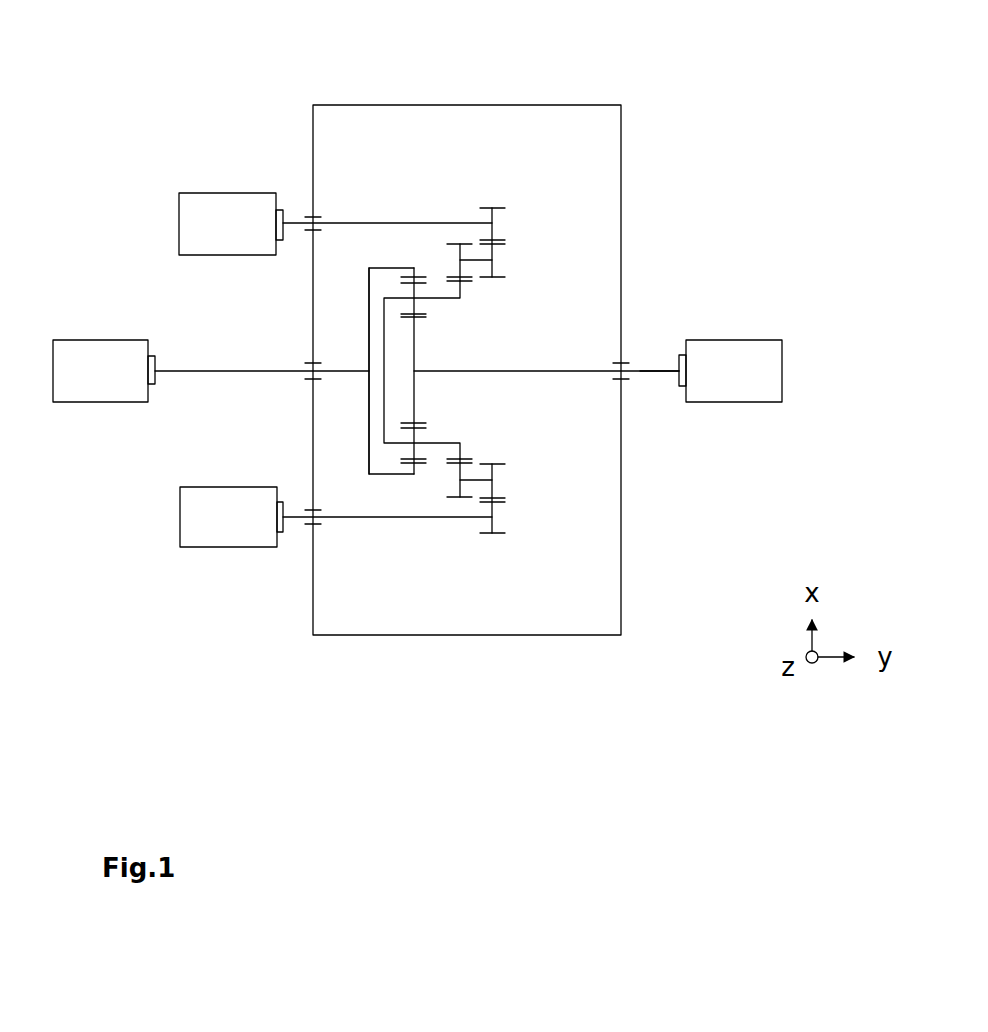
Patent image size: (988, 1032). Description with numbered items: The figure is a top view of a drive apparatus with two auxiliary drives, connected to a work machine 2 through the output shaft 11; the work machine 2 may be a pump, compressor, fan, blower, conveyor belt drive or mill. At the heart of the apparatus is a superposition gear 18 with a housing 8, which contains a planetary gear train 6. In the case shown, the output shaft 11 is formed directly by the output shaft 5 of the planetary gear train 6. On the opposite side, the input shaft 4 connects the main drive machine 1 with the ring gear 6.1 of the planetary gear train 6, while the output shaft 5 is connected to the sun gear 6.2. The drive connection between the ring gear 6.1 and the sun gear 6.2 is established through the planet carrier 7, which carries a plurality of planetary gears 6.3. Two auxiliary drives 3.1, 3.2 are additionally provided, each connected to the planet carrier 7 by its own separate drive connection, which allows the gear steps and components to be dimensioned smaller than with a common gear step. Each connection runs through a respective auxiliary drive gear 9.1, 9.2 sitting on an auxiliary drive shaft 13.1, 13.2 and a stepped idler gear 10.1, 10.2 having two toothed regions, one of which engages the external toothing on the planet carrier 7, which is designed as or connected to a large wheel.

The main drive machine 1 is at (103, 340).
The work machine 2 is at (738, 337).
The auxiliary drive 3.1 is at (240, 192).
The auxiliary drive 3.2 is at (240, 547).
The input shaft 4 is at (190, 370).
The output shaft 5 is at (540, 370).
The planetary gear train 6 is at (408, 382).
The ring gear 6.1 is at (370, 396).
The sun gear 6.2 is at (418, 383).
The planetary gears 6.3 is at (417, 450).
The planet carrier 7 is at (460, 449).
The housing 8 is at (350, 104).
The auxiliary drive gear 9.1 is at (505, 212).
The auxiliary drive gear 9.2 is at (492, 518).
The stepped idler gear 10.1 is at (505, 258).
The stepped idler gear 10.2 is at (492, 475).
The output shaft 11 is at (660, 365).
The auxiliary drive shaft 13.1 is at (438, 222).
The auxiliary drive shaft 13.2 is at (438, 522).
The superposition gear 18 is at (446, 371).